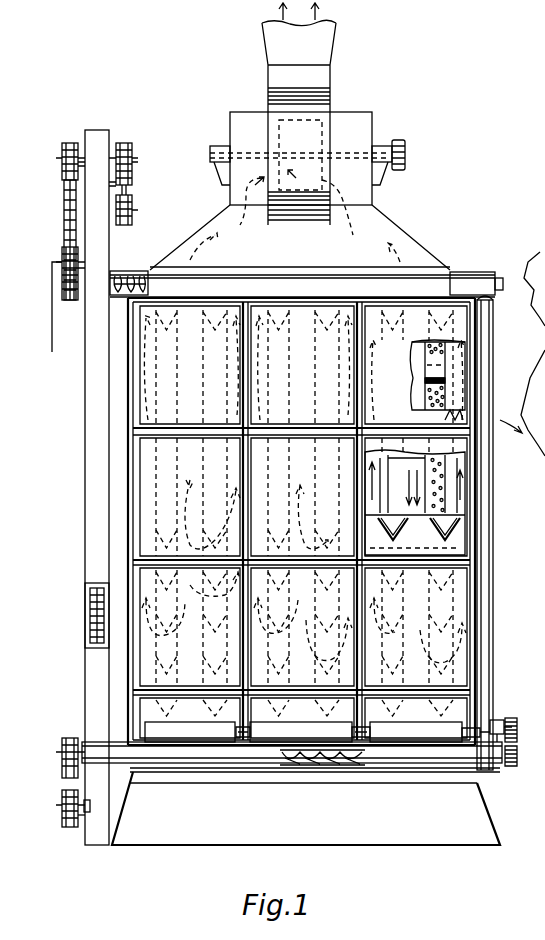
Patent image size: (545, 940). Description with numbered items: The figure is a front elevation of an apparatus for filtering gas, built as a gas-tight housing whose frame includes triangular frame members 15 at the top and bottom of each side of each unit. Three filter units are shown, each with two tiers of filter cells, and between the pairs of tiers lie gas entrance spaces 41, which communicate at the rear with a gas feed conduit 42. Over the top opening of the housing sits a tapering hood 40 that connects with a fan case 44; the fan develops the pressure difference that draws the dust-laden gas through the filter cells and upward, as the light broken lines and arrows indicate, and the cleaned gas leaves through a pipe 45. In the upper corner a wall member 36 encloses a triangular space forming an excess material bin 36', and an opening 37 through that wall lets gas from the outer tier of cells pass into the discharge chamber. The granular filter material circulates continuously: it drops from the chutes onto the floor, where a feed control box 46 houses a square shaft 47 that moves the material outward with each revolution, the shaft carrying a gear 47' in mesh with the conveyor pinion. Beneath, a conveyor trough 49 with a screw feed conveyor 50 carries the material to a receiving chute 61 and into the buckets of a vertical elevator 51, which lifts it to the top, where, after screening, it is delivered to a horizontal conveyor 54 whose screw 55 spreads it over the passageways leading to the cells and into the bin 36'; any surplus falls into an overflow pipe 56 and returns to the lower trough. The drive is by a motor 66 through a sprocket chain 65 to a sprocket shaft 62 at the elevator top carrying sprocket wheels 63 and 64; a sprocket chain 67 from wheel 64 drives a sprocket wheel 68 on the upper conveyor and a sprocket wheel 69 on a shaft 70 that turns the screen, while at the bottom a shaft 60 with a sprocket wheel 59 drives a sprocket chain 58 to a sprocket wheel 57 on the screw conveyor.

The triangular frame member 15 is at (450, 358).
The wall member 36 is at (474, 382).
The overflow storage space 36' is at (444, 502).
The opening 37 is at (440, 353).
The hood 40 is at (400, 242).
The gas entrance space 41 is at (300, 316).
The gas feed conduit 42 is at (538, 452).
The fan case 44 is at (283, 112).
The pipe 45 is at (276, 46).
The feed control box 46 is at (190, 733).
The shaft 47 is at (507, 708).
The gear 47' is at (525, 729).
The conveyor trough 49 is at (110, 762).
The screw feed conveyor 50 is at (300, 766).
The elevator 51 is at (92, 614).
The horizontal conveyor 54 is at (125, 280).
The screw 55 is at (138, 284).
The overflow pipe 56 is at (480, 620).
The sprocket wheel 57 is at (68, 740).
The sprocket chain 58 is at (70, 792).
The sprocket wheel 59 is at (86, 830).
The shaft 60 is at (63, 812).
The receiving chute 61 is at (98, 802).
The sprocket shaft 62 is at (134, 160).
The sprocket wheel 63 is at (126, 143).
The sprocket wheel 64 is at (70, 143).
The sprocket chain 65 is at (130, 186).
The motor 66 is at (132, 208).
The sprocket chain 67 is at (74, 143).
The sprocket wheel 68 is at (66, 270).
The sprocket wheel 69 is at (66, 248).
The shaft 70 is at (538, 253).